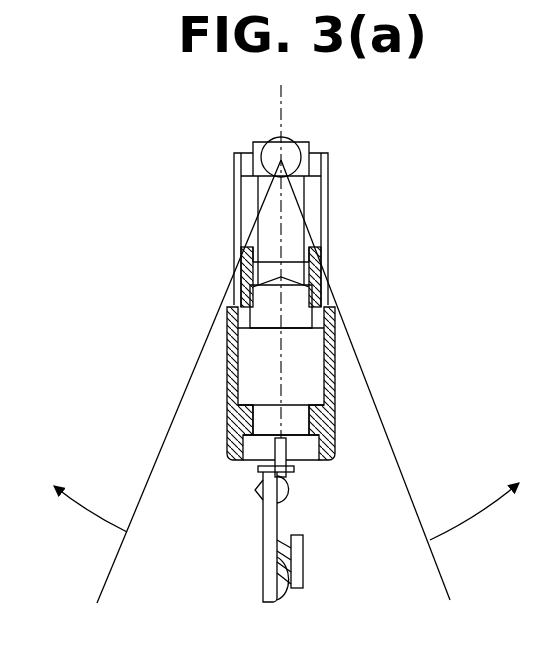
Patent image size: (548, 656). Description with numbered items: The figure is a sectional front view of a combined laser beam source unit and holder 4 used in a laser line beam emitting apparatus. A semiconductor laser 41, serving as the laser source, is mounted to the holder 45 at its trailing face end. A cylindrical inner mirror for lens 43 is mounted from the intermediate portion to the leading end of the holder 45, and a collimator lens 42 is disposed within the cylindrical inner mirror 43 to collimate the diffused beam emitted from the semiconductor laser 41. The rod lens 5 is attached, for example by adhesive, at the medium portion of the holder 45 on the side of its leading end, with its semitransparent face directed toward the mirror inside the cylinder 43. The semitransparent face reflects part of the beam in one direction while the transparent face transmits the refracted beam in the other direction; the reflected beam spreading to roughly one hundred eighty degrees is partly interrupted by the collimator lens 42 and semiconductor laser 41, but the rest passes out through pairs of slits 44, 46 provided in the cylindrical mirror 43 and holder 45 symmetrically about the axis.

The holder assembly 4 is at (358, 230).
The rod lens 5 is at (303, 126).
The semiconductor laser 41 is at (236, 452).
The collimator lens 42 is at (297, 300).
The cylindrical inner mirror for lens 43 is at (329, 248).
The slit 44 is at (234, 205).
The holder 45 is at (336, 373).
The slit 46 is at (330, 177).